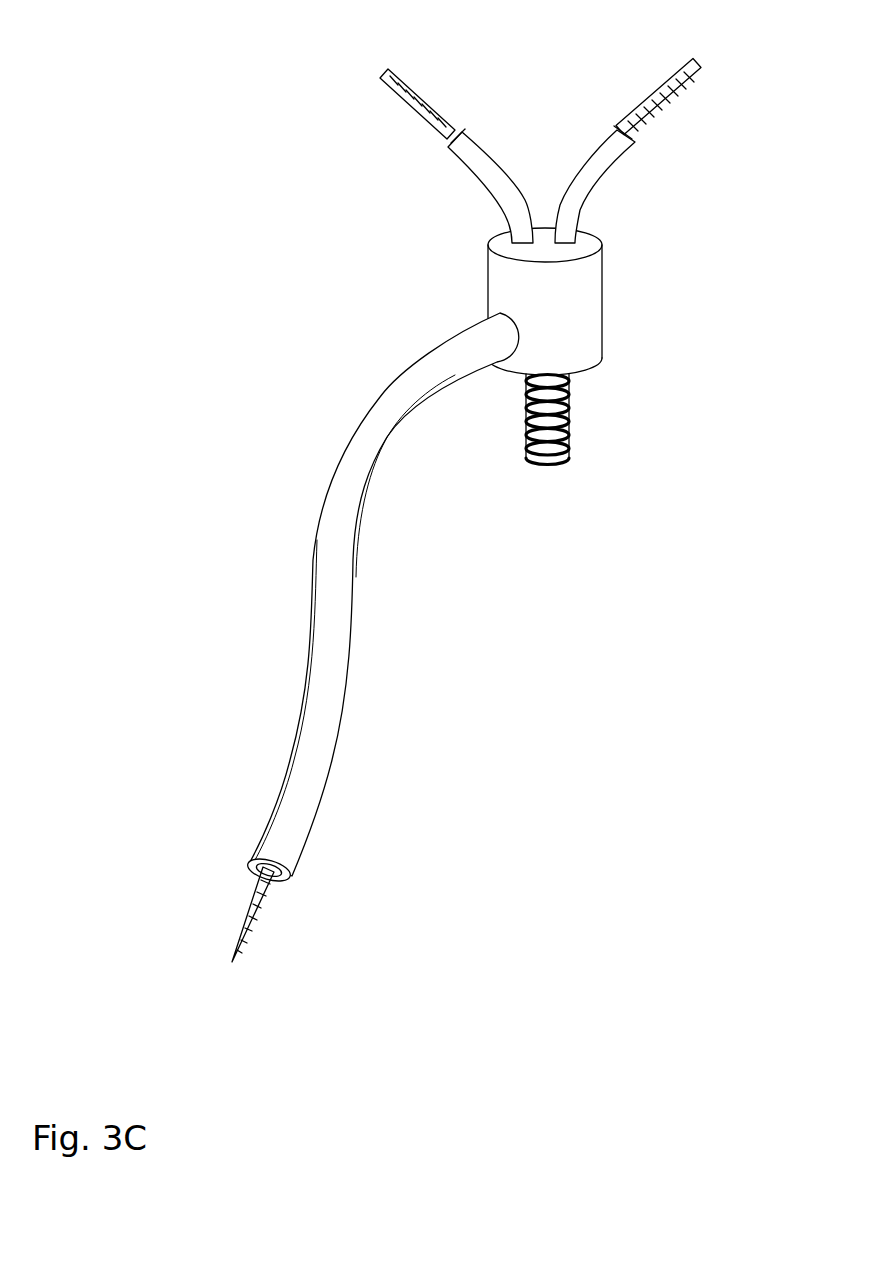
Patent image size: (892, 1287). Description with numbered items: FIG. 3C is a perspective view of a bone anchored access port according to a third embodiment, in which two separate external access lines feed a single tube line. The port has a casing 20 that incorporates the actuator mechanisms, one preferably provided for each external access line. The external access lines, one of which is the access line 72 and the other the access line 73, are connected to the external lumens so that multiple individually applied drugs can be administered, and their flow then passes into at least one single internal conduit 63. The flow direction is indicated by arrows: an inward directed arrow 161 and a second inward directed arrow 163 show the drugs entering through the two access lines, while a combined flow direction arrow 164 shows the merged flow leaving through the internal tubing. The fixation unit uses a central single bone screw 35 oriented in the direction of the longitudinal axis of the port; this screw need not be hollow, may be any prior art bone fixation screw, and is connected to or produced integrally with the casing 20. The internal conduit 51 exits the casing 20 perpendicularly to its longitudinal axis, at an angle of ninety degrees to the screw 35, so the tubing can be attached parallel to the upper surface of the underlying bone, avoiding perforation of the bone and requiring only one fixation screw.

The casing 20 is at (583, 310).
The bone screw 35 is at (570, 408).
The internal conduit 51 is at (333, 630).
The internal conduit 63 is at (292, 880).
The access line 72 is at (477, 158).
The second tube branch 73 is at (602, 153).
The inward directed arrow 161 is at (680, 93).
The second wire 163 is at (402, 76).
The combined flow direction arrow 164 is at (258, 938).